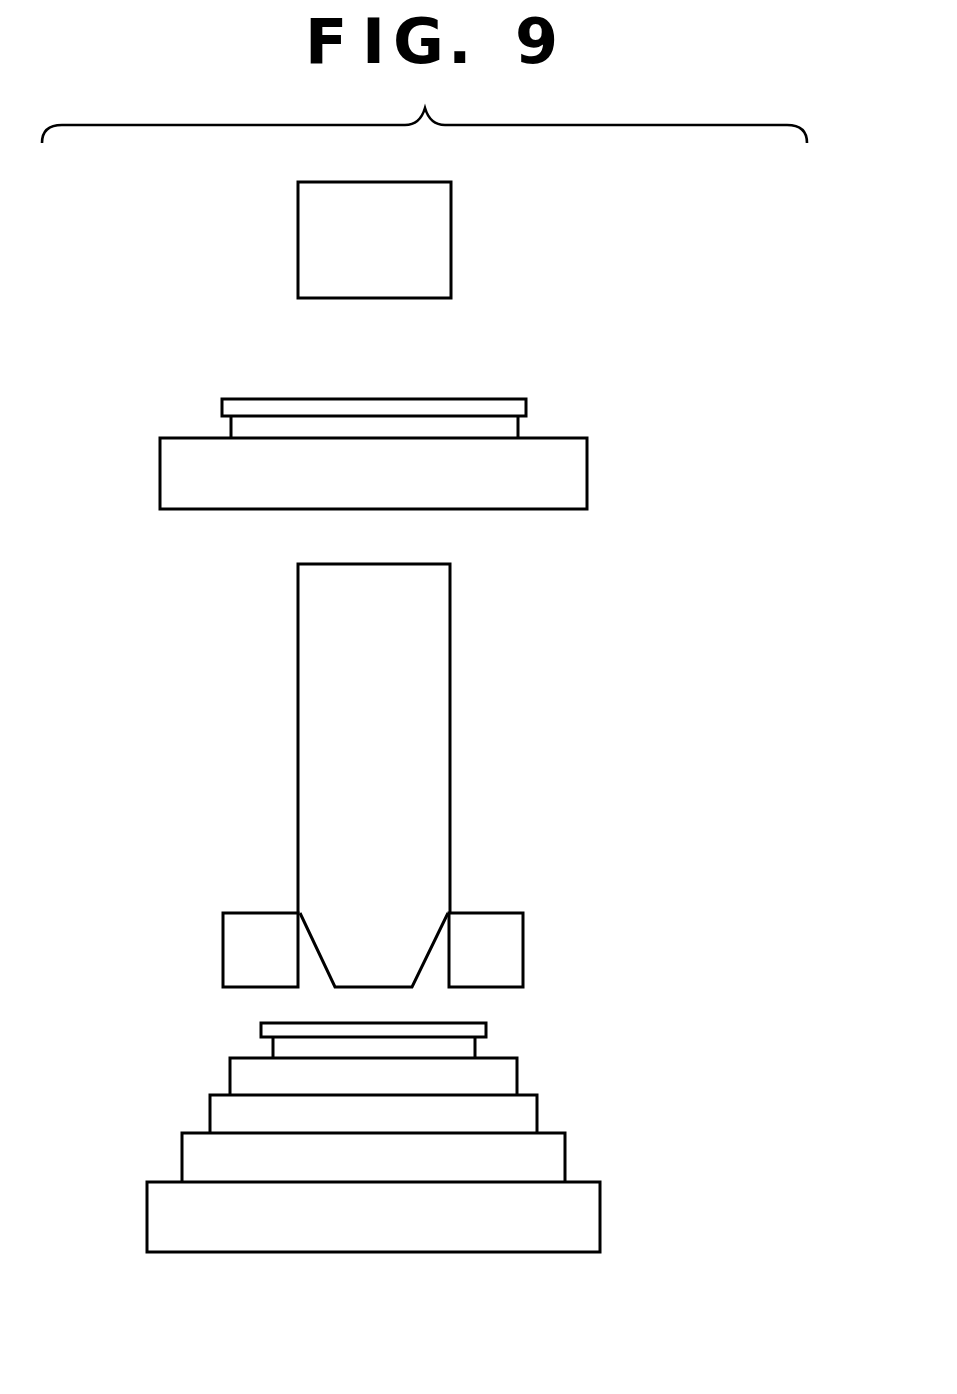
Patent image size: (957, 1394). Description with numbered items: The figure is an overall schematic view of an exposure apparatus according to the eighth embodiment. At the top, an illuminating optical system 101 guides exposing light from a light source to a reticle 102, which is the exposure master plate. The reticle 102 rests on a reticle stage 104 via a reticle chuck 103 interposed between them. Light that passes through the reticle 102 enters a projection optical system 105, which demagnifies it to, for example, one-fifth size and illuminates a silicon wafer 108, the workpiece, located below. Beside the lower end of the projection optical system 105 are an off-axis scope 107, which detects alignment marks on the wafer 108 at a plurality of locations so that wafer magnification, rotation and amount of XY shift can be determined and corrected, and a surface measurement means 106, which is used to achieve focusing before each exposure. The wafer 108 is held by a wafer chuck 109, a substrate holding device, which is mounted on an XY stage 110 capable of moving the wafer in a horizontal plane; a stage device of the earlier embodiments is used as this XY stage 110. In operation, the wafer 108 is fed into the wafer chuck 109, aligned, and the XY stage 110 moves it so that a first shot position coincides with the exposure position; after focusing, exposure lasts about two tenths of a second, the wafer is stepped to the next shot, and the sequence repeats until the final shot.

The illuminating optical system 101 is at (418, 242).
The reticle 102 is at (470, 407).
The reticle chuck 103 is at (505, 429).
The reticle stage 104 is at (563, 473).
The projection optical system 105 is at (407, 653).
The surface measurement means 106 is at (477, 928).
The off-axis scope 107 is at (263, 933).
The silicon wafer 108 is at (455, 1020).
The wafer chuck 109 is at (458, 1048).
The XY stage 110 is at (492, 1077).